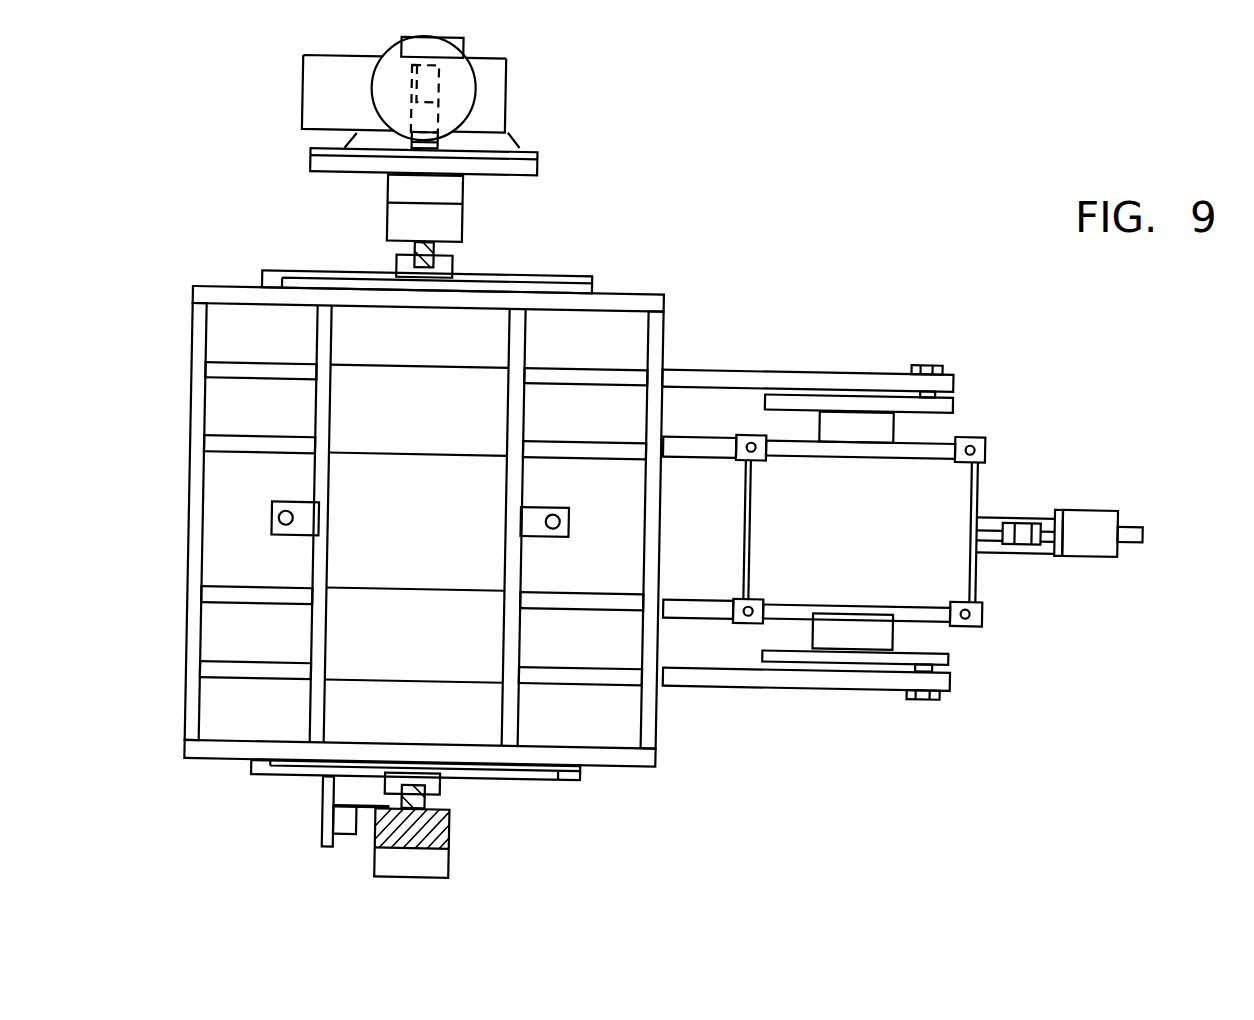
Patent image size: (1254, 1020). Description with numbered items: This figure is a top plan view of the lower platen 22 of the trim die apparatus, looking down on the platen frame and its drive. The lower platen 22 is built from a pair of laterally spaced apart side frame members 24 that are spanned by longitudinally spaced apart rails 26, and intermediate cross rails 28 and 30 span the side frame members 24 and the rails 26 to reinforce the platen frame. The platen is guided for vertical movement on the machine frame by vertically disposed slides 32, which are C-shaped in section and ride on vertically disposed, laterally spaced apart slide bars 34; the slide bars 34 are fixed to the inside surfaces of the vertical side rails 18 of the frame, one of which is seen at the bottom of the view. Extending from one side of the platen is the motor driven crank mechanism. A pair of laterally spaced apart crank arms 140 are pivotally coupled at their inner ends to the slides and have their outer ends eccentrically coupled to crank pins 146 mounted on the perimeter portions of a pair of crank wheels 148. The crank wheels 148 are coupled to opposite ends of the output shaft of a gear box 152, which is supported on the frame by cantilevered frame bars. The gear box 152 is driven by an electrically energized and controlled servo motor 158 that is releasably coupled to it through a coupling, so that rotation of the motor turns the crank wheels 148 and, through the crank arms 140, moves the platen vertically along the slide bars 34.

The vertical side rails 18 is at (445, 835).
The lower platen 22 is at (648, 238).
The side frame members 24 is at (618, 294).
The rails 26 is at (203, 342).
The intermediate cross rail 28 is at (518, 329).
The intermediate cross rail 30 is at (310, 370).
The slides 32 is at (403, 261).
The slide bars 34 is at (432, 246).
The crank arms 140 is at (814, 369).
The crank pins 146 is at (933, 351).
The crank wheels 148 is at (942, 391).
The gear box 152 is at (890, 564).
The servo motor 158 is at (1094, 517).